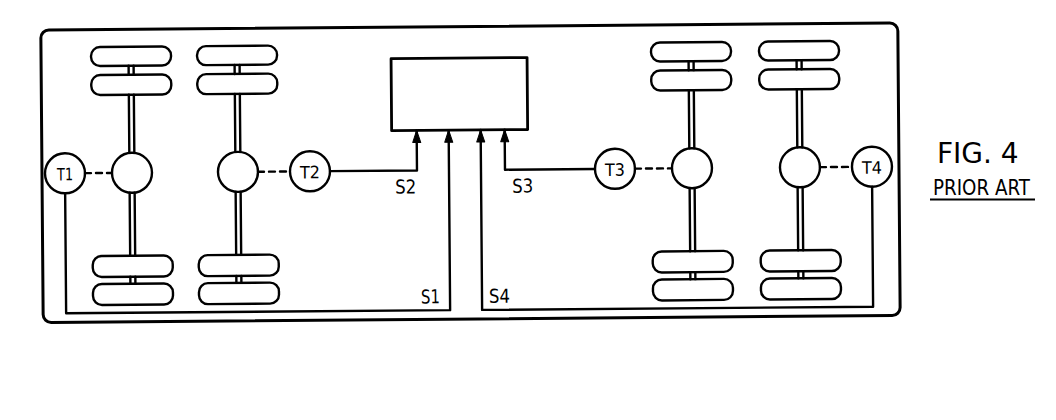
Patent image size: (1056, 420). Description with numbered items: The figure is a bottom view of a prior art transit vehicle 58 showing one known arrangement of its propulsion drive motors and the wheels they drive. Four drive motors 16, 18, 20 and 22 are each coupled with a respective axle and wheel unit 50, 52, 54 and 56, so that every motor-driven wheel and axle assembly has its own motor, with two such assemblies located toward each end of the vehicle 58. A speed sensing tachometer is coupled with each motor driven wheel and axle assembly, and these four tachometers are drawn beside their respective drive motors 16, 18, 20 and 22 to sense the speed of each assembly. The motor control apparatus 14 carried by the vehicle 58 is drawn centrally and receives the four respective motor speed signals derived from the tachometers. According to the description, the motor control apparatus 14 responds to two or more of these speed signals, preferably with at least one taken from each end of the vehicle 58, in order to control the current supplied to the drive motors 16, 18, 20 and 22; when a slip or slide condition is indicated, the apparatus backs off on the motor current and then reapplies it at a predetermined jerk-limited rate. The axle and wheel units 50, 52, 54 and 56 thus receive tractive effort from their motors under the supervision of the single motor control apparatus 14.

The motor control apparatus 14 is at (528, 86).
The drive motor 16 is at (147, 157).
The drive motor 18 is at (224, 157).
The drive motor 20 is at (706, 157).
The drive motor 22 is at (786, 157).
The axle and wheel unit 50 is at (97, 294).
The axle and wheel unit 52 is at (277, 295).
The axle and wheel unit 54 is at (656, 286).
The axle and wheel unit 56 is at (839, 290).
The vehicle 58 is at (106, 27).